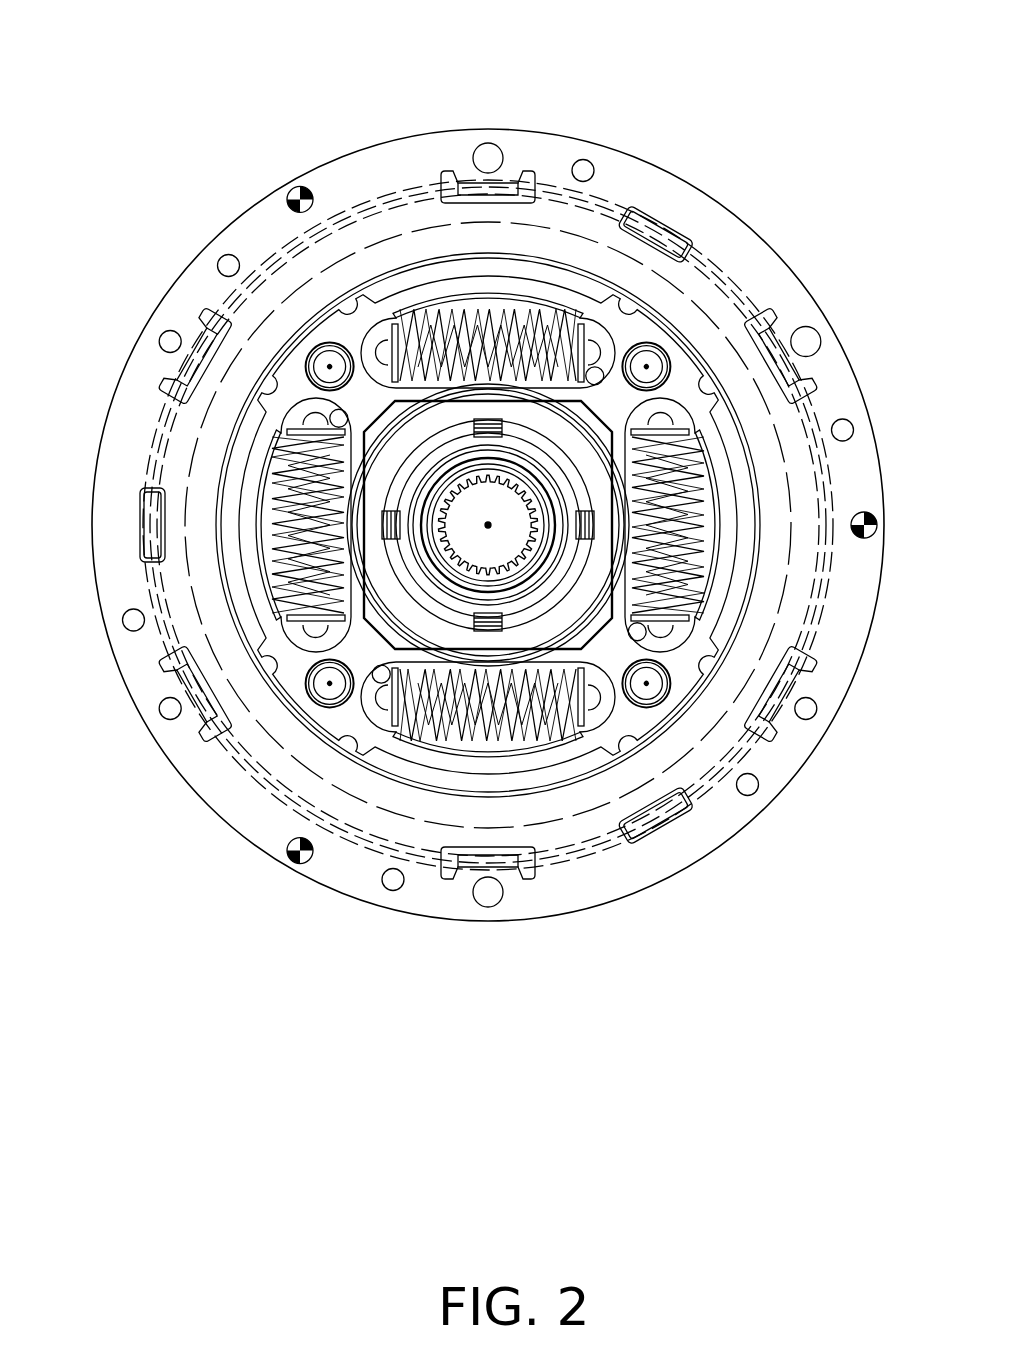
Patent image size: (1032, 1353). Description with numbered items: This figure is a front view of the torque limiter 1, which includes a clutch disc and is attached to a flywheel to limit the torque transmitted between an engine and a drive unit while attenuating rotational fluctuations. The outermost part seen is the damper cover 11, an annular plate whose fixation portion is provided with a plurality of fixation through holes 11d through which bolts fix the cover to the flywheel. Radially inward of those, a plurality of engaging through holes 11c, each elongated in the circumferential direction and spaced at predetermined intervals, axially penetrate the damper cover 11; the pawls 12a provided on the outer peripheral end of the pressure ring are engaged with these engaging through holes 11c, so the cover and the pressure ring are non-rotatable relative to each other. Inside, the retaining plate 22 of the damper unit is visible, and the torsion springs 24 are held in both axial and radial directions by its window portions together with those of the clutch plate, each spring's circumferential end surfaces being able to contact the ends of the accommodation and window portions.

The torque limiter 1 is at (205, 106).
The damper cover 11 is at (697, 180).
The engaging through holes 11c is at (626, 222).
The fixation through holes 11d is at (491, 146).
The pawls 12a is at (683, 234).
The retaining plate 22 is at (255, 442).
The torsion springs 24 is at (280, 493).